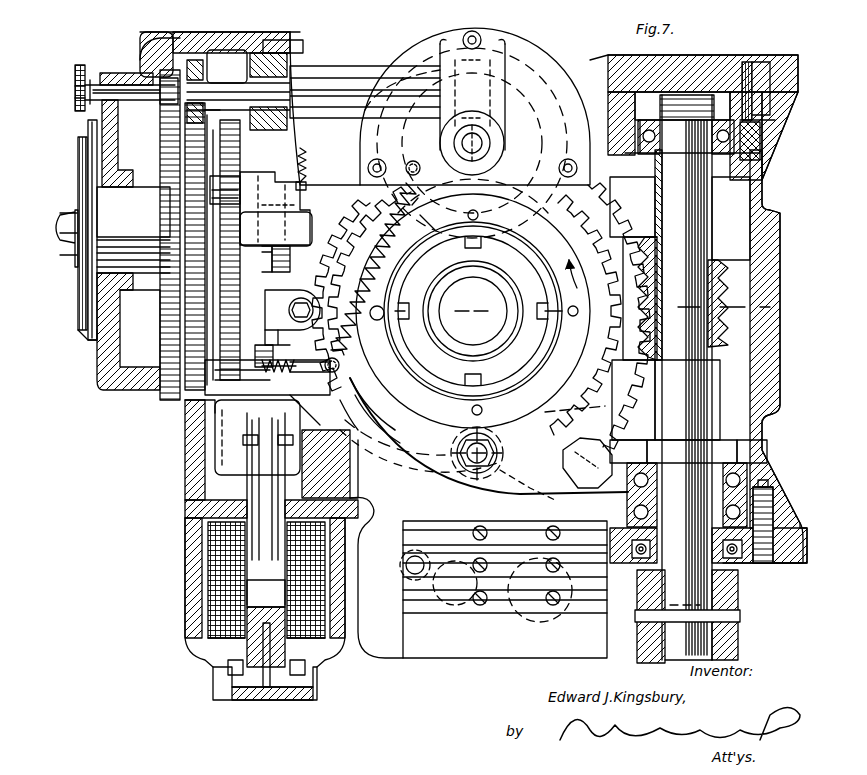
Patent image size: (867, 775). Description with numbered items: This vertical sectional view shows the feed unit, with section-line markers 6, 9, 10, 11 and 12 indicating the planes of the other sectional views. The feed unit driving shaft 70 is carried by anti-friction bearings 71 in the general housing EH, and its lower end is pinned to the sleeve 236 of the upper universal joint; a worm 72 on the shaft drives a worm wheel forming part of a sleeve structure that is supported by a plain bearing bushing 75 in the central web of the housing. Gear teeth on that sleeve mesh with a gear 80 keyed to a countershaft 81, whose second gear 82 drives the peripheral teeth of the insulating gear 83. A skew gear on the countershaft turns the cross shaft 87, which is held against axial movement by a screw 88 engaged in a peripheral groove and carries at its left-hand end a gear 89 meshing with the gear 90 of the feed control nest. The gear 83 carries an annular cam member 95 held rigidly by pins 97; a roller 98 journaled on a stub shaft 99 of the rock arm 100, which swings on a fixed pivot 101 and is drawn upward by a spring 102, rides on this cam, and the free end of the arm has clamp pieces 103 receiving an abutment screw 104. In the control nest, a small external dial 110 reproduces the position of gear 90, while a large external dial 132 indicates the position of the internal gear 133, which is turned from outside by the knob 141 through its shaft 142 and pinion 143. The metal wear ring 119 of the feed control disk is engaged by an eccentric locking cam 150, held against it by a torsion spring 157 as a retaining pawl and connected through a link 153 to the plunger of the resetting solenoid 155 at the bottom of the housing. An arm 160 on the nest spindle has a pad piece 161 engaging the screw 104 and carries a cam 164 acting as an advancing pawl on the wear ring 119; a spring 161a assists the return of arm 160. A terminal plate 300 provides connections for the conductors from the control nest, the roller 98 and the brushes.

The section line 6- 6 is at (37, 262).
The section line 9- 9 is at (472, 26).
The section line 10- 10 is at (152, 4).
The section line 11- 11 is at (160, 12).
The section line 12- 12 is at (210, 58).
The feed unit driving shaft 70 is at (693, 206).
The anti-friction bearings 71 is at (730, 136).
The worm 72 is at (728, 262).
The plain bearing bushing 75 is at (636, 240).
The gear 80 is at (558, 58).
The countershaft 81 is at (486, 140).
The second gear 82 is at (497, 132).
The gear 83 is at (582, 218).
The cross shaft 87 is at (362, 82).
The screw 88 is at (290, 120).
The gear 89 is at (196, 72).
The gear 90 is at (200, 292).
The annular cam member 95 is at (600, 342).
The pins 97 is at (563, 314).
The roller 98 is at (560, 432).
The stub shaft 99 is at (472, 460).
The rock arm 100 is at (530, 487).
The fixed pivot 101 is at (600, 456).
The spring 102 is at (415, 220).
The clamp pieces 103 is at (278, 322).
The abutment screw 104 is at (280, 270).
The small external dial 110 is at (78, 297).
The wear resisting outer ring 119 is at (282, 296).
The large external dial 132 is at (90, 330).
The internal gear 133 is at (165, 210).
The knob 141 is at (75, 78).
The shaft 142 is at (120, 85).
The pinion 143 is at (168, 95).
The eccentric locking cam 150 is at (272, 392).
The link 153 is at (300, 404).
The resetting solenoid 155 is at (226, 552).
The torsion spring 157 is at (282, 362).
The arm 160 is at (272, 178).
The pad piece 161 is at (292, 216).
The spring 161a is at (308, 170).
The cam 164 is at (238, 184).
The sleeve 236 is at (738, 637).
The terminal plate 300 is at (468, 648).
The general housing EH is at (770, 263).